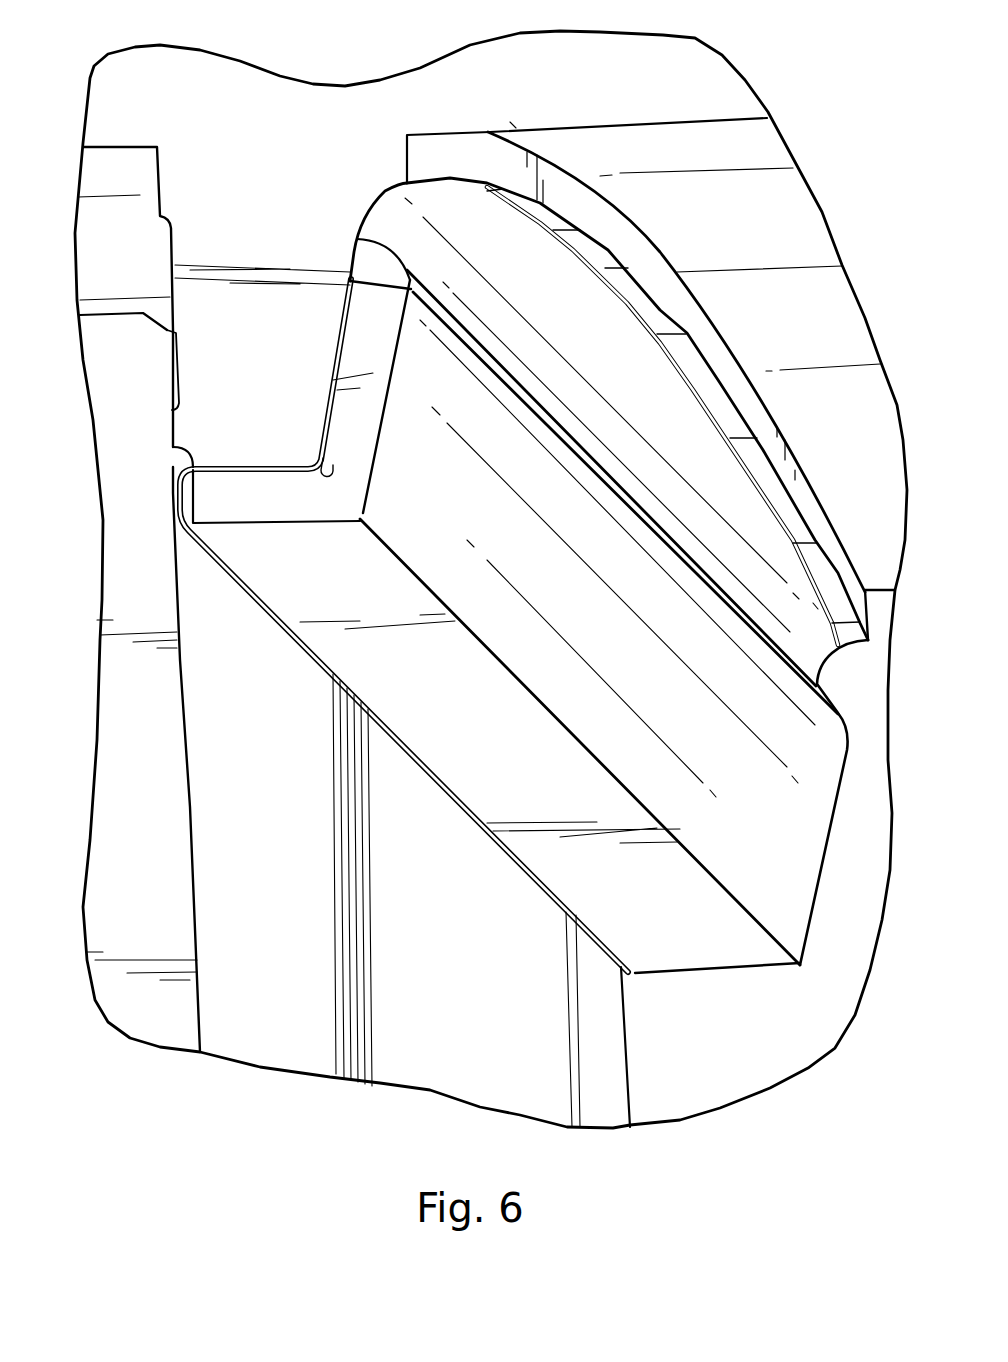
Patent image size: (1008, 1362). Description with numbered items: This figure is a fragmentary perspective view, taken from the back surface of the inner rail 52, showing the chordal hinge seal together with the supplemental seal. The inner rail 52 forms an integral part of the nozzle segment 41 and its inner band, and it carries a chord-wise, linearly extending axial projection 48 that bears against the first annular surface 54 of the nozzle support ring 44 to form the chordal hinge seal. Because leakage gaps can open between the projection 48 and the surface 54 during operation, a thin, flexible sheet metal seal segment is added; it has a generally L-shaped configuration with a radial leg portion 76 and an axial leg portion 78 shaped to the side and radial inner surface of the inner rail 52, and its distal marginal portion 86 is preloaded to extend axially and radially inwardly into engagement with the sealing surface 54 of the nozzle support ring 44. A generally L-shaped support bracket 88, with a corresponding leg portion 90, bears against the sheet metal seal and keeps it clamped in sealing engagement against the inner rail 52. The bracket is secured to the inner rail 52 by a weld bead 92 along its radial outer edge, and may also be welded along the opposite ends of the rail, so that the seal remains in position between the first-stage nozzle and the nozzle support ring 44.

The nozzle segment 41 is at (523, 67).
The nozzle support ring 44 is at (132, 797).
The axial projection 48 is at (185, 427).
The inner rail 52 is at (262, 248).
The first annular surface 54 is at (253, 1010).
The radial leg portion 76 is at (342, 340).
The axial leg portion 78 is at (242, 470).
The distal marginal portion 86 is at (172, 490).
The support bracket 88 is at (573, 607).
The bracket leg portion 90 is at (453, 743).
The weld bead 92 is at (368, 257).